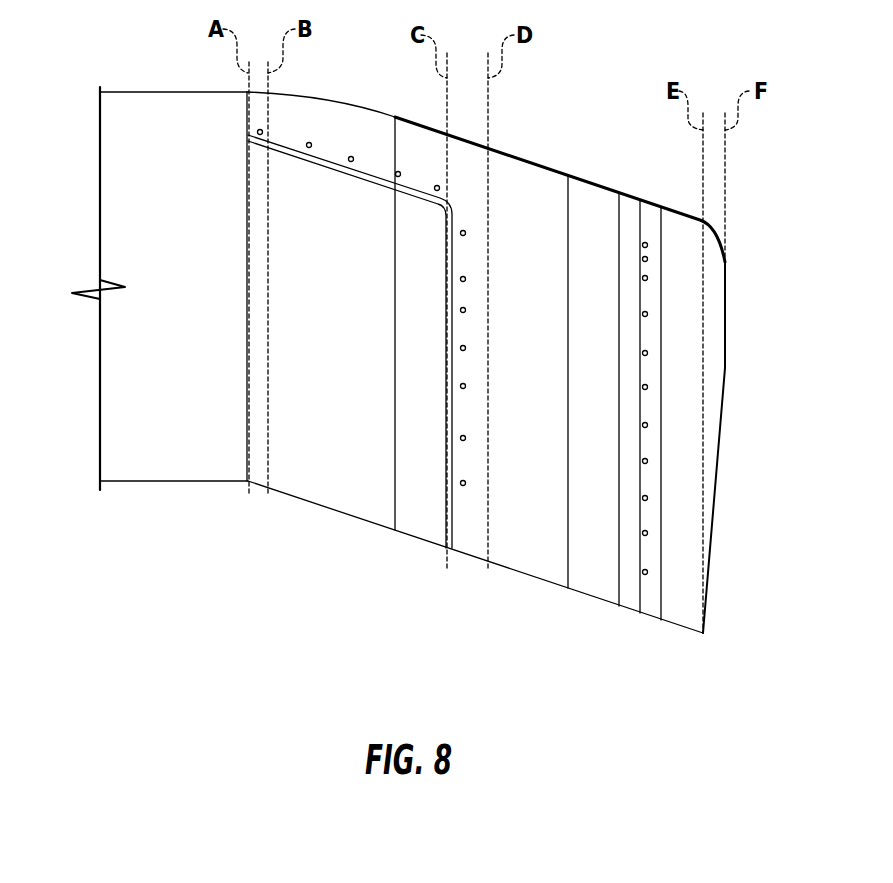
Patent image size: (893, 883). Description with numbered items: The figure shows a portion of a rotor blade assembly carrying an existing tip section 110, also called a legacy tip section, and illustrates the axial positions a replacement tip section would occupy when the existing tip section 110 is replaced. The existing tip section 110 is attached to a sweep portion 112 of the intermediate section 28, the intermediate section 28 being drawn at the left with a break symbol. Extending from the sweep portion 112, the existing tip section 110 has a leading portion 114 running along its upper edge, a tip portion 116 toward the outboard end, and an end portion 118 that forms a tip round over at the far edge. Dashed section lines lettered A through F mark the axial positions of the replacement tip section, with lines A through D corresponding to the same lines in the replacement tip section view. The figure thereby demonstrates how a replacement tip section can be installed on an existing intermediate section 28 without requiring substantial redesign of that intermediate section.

The intermediate section 28 is at (127, 240).
The existing tip section 110 is at (592, 64).
The sweep portion 112 is at (323, 482).
The leading portion 114 is at (333, 120).
The tip portion 116 is at (587, 562).
The end portion 118 is at (725, 367).